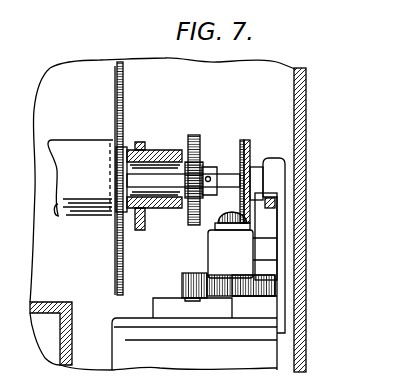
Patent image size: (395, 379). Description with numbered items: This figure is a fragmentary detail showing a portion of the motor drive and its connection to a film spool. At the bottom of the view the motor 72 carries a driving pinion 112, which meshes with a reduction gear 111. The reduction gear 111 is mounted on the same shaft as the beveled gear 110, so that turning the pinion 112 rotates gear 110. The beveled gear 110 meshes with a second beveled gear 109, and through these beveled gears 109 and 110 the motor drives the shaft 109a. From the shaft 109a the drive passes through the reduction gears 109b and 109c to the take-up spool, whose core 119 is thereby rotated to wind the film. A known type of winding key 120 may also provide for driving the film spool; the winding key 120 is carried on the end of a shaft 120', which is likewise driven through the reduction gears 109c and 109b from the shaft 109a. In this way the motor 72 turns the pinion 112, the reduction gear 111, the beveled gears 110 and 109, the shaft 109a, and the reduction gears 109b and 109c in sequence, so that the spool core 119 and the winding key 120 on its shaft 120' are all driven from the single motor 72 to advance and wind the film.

The motor 72 is at (168, 215).
The beveled gear 109 is at (252, 147).
The shaft 109a is at (228, 180).
The reduction gear 109b is at (186, 158).
The reduction gear 109c is at (198, 135).
The beveled gear 110 is at (217, 218).
The reduction gear 111 is at (243, 290).
The driving pinion 112 is at (190, 275).
The spool core 119 is at (90, 200).
The winding key 120 is at (134, 178).
The shaft 120' is at (93, 168).